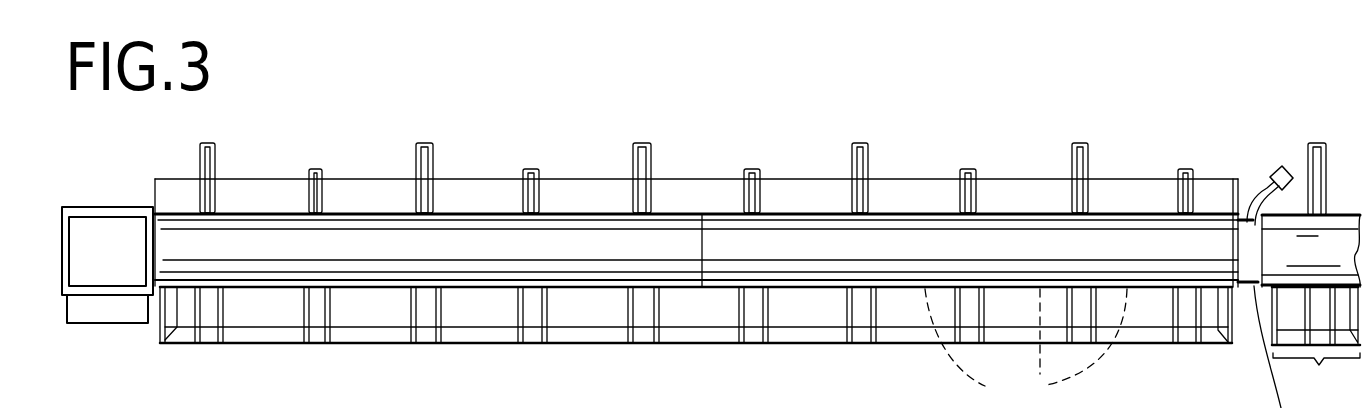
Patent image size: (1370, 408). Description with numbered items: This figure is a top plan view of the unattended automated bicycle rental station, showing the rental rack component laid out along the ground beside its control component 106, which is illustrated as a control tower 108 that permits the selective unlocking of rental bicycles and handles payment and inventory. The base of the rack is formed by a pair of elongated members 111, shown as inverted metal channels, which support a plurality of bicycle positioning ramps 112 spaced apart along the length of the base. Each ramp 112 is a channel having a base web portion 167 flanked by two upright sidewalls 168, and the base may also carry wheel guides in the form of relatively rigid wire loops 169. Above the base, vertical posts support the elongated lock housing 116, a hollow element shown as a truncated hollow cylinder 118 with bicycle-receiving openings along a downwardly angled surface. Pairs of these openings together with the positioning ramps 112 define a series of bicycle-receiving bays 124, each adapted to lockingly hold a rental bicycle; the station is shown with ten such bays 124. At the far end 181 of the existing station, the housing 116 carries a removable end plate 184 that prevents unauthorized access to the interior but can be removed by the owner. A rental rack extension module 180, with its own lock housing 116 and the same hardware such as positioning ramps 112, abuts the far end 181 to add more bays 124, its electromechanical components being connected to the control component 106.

The control component 106 is at (83, 200).
The control tower 108 is at (62, 255).
The elongated members 111 is at (343, 200).
The bicycle positioning ramps 112 is at (962, 165).
The lock housing 116 is at (1023, 213).
The truncated hollow cylinder 118 is at (895, 240).
The bicycle-receiving bays 124 is at (1026, 342).
The base web portion 167 is at (752, 175).
The upright sidewalls 168 is at (524, 170).
The wire loops 169 is at (737, 344).
The module 180 is at (1311, 269).
The far end 181 is at (1233, 248).
The removable end plate 184 is at (1252, 285).